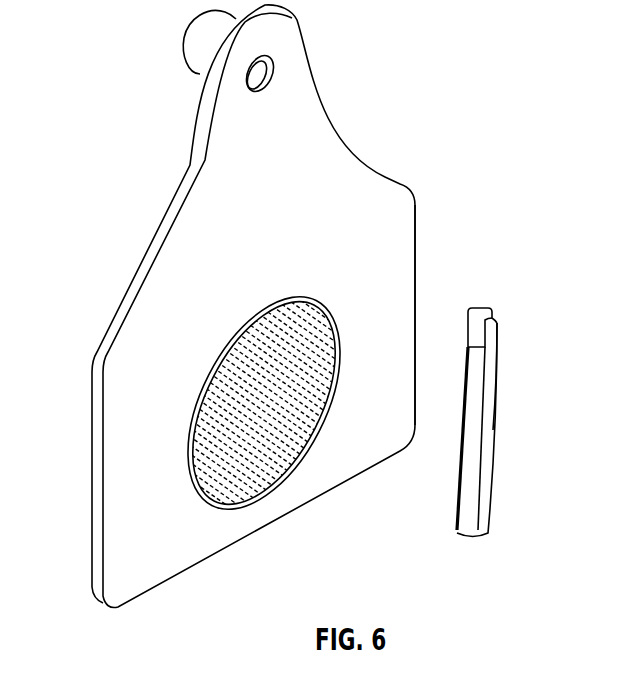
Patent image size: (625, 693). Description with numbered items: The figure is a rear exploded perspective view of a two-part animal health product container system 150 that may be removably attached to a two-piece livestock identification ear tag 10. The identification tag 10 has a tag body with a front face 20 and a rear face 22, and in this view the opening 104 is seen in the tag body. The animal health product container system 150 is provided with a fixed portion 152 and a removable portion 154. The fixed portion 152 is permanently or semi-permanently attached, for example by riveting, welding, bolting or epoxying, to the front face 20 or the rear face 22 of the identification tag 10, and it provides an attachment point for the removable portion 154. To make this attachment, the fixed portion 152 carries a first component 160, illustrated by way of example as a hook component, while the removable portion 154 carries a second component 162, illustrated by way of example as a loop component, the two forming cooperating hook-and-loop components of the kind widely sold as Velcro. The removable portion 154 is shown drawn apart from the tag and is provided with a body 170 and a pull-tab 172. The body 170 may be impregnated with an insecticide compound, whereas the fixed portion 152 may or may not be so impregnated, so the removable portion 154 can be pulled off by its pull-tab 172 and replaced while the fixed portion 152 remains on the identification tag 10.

The identification tag 10 is at (390, 46).
The front face 20 is at (90, 390).
The rear face 22 is at (418, 224).
The opening in tag body 104 is at (192, 390).
The fixed portion 152 is at (192, 486).
The first component 160 is at (333, 321).
The animal health product container system 150 is at (479, 435).
The removable portion 154 is at (492, 474).
The second component 162 is at (457, 492).
The body 170 is at (499, 324).
The pull-tab 172 is at (472, 308).